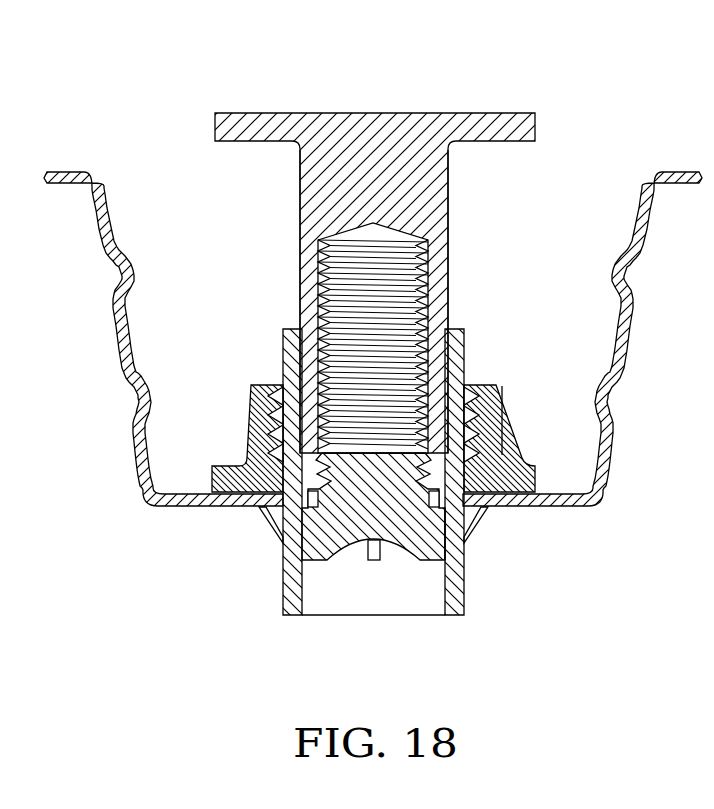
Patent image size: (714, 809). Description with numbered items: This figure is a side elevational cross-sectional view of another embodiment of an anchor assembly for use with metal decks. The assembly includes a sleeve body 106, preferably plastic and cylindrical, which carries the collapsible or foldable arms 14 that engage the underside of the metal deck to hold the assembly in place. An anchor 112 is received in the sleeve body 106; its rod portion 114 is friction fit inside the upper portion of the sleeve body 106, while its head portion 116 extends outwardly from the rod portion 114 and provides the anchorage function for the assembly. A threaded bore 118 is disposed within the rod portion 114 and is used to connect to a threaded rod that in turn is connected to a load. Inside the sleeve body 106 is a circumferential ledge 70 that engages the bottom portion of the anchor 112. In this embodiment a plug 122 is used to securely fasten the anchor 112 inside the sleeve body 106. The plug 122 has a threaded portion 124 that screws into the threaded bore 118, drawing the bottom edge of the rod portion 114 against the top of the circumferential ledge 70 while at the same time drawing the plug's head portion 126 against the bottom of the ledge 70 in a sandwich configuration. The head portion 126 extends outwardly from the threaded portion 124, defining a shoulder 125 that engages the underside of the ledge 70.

The anchor 112 is at (375, 238).
The head portion 116 is at (503, 128).
The rod portion 114 is at (448, 196).
The threaded bore 118 is at (390, 282).
The threaded portion 124 is at (535, 475).
The shoulder 125 is at (478, 505).
The circumferential ledge 70 is at (268, 504).
The sleeve body 106 is at (283, 573).
The collapsible arms 14 is at (397, 564).
The plug 122 is at (466, 550).
The head portion 126 is at (320, 547).